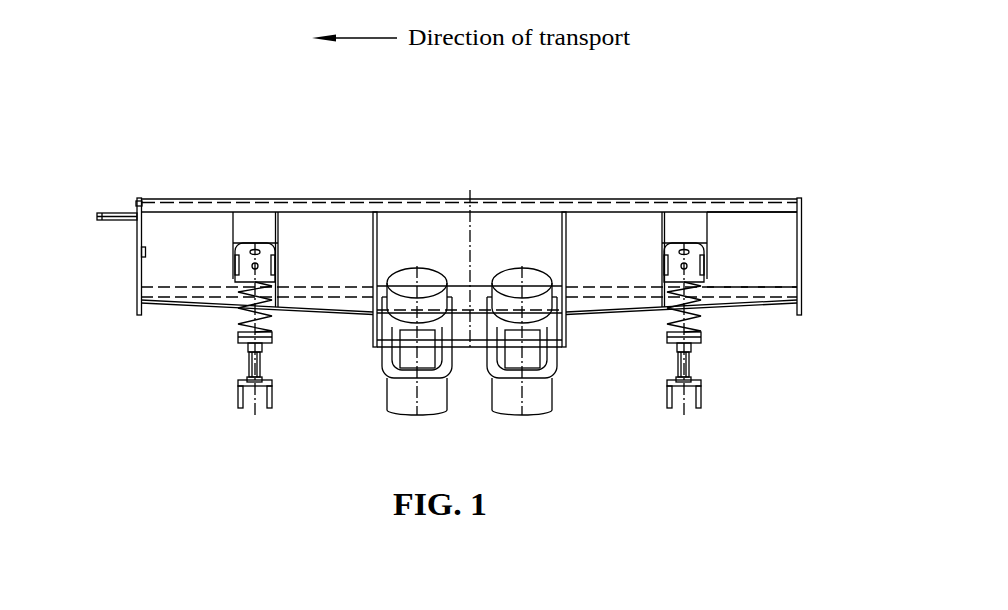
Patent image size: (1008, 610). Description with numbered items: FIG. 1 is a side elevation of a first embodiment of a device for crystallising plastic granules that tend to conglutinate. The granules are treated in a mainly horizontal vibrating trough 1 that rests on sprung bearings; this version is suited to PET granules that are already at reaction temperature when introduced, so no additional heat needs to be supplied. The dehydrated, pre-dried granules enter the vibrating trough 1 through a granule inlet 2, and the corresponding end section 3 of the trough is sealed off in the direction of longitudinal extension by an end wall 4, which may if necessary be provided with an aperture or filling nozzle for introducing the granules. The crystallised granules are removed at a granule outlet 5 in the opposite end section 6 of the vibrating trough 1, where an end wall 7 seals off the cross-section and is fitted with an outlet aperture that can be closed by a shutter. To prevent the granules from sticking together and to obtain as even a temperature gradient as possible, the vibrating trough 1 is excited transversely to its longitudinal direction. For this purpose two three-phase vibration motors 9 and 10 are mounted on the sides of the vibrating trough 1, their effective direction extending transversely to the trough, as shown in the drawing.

The vibrating trough 1 is at (338, 219).
The granule inlet 2 is at (769, 224).
The end section 3 is at (776, 272).
The end wall 4 is at (803, 248).
The granule outlet 5 is at (136, 252).
The end section 6 is at (149, 274).
The end wall 7 is at (139, 204).
The three-phase vibration motor 9 is at (409, 270).
The three-phase vibration motor 10 is at (532, 270).